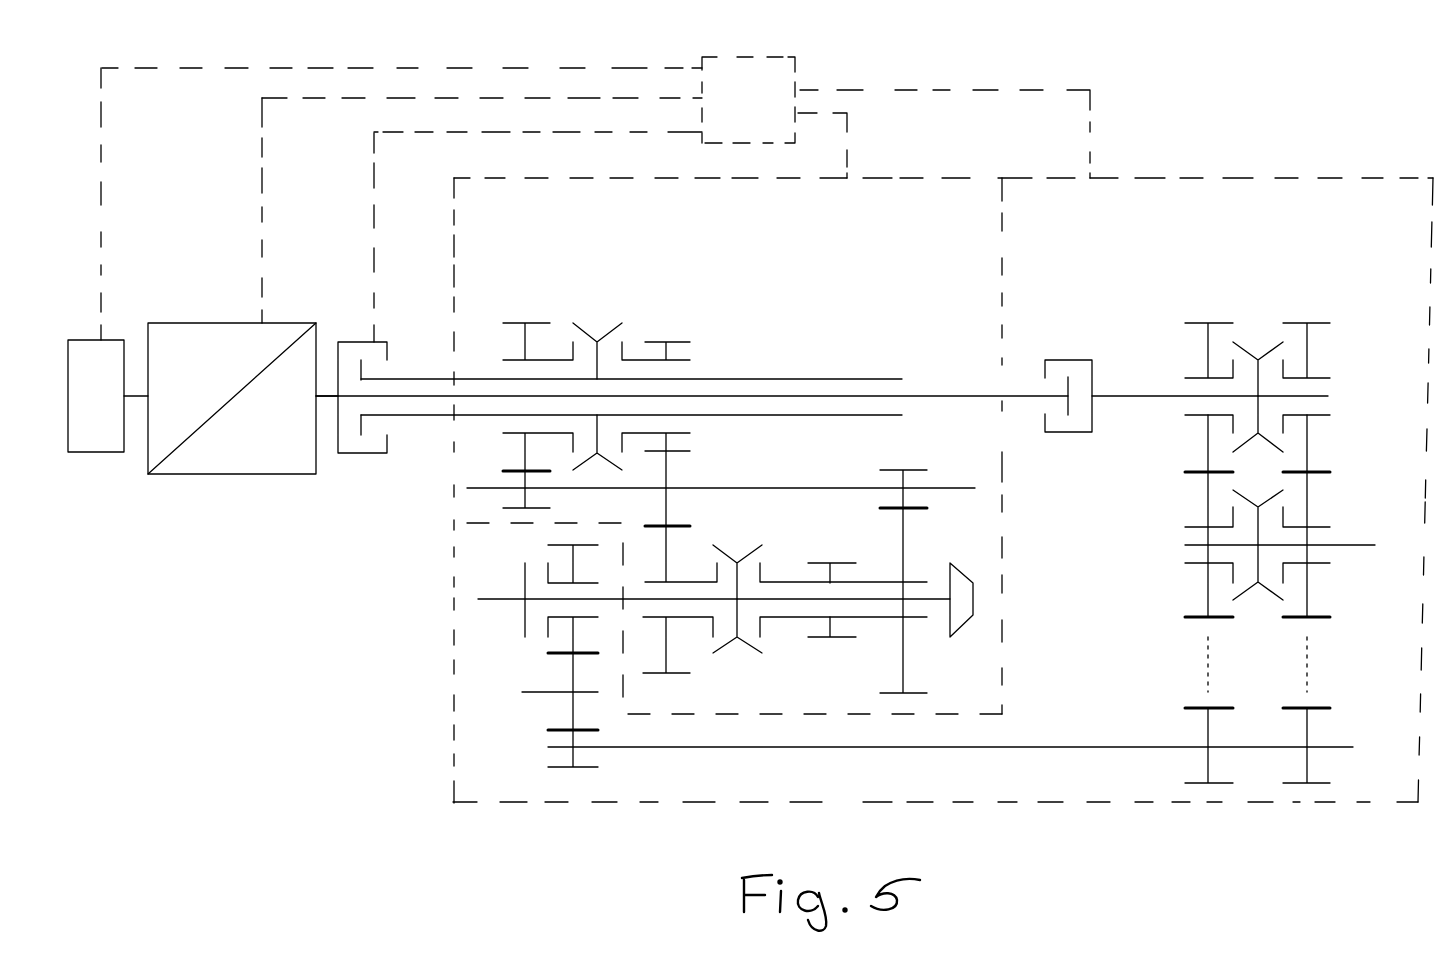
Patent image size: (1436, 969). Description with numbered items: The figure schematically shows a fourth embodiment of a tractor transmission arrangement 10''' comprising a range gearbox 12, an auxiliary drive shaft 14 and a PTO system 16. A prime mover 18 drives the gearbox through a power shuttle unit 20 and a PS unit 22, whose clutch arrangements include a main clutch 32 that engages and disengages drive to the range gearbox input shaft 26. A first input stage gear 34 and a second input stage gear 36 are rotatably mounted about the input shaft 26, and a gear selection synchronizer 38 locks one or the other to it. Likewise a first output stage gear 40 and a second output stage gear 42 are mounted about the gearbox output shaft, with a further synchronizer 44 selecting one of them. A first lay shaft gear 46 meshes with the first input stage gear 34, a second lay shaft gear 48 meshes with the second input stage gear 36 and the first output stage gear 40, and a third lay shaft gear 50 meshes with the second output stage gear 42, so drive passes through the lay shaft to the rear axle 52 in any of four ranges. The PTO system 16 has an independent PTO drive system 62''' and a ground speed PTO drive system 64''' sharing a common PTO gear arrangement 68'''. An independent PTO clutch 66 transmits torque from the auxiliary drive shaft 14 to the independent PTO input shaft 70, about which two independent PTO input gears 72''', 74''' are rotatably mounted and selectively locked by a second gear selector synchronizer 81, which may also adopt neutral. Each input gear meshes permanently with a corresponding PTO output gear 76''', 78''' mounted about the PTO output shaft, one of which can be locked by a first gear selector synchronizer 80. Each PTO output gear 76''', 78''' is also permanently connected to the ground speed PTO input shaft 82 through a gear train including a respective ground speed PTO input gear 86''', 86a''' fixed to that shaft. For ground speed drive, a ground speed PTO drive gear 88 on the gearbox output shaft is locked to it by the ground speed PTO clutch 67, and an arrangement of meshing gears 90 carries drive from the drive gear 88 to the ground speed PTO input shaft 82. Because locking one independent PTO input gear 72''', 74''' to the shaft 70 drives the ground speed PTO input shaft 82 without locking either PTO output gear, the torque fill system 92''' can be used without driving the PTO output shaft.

The hybrid powertrain 10''' is at (1214, 79).
The range gearbox 12 is at (903, 178).
The auxiliary drive shaft 14 is at (949, 392).
The PTO system 16 is at (1237, 178).
The prime mover 18 is at (104, 420).
The power shuttle unit 20 is at (208, 374).
The PS unit 22 is at (262, 460).
The input shaft 26 is at (747, 375).
The main clutch 32 is at (363, 455).
The first input stage gear 34 is at (522, 323).
The second input stage gear 36 is at (680, 340).
The gear selection synchronizer 38 is at (590, 333).
The first output stage gear 40 is at (667, 545).
The second output stage gear 42 is at (907, 535).
The further synchronizer 44 is at (743, 655).
The first lay shaft gear 46 is at (520, 480).
The second lay shaft gear 48 is at (667, 472).
The third lay shaft gear 50 is at (908, 467).
The rear axle 52 is at (970, 577).
The independent PTO drive system 62''' is at (1374, 152).
The ground speed PTO drive system 64''' is at (873, 533).
The independent PTO clutch 66 is at (1065, 357).
The ground speed PTO clutch 67 is at (523, 625).
The PTO gear arrangement 68''' is at (1101, 838).
The independent PTO input shaft 70 is at (1130, 360).
The first independent PTO input gear 72''' is at (1241, 314).
The second independent PTO input gear 74''' is at (1359, 329).
The first PTO output gear 76''' is at (1175, 516).
The second PTO output gear 78''' is at (1356, 516).
The first gear selector synchronizer 80 is at (1277, 598).
The second gear selector synchronizer 81 is at (1263, 353).
The ground speed PTO input shaft 82 is at (950, 747).
The ground speed PTO input gear 86''' is at (1193, 783).
The ground speed PTO input gear 86a''' is at (1327, 793).
The ground speed PTO drive gear 88 is at (570, 556).
The arrangement of meshing gears 90 is at (570, 717).
The torque fill system 92''' is at (595, 183).